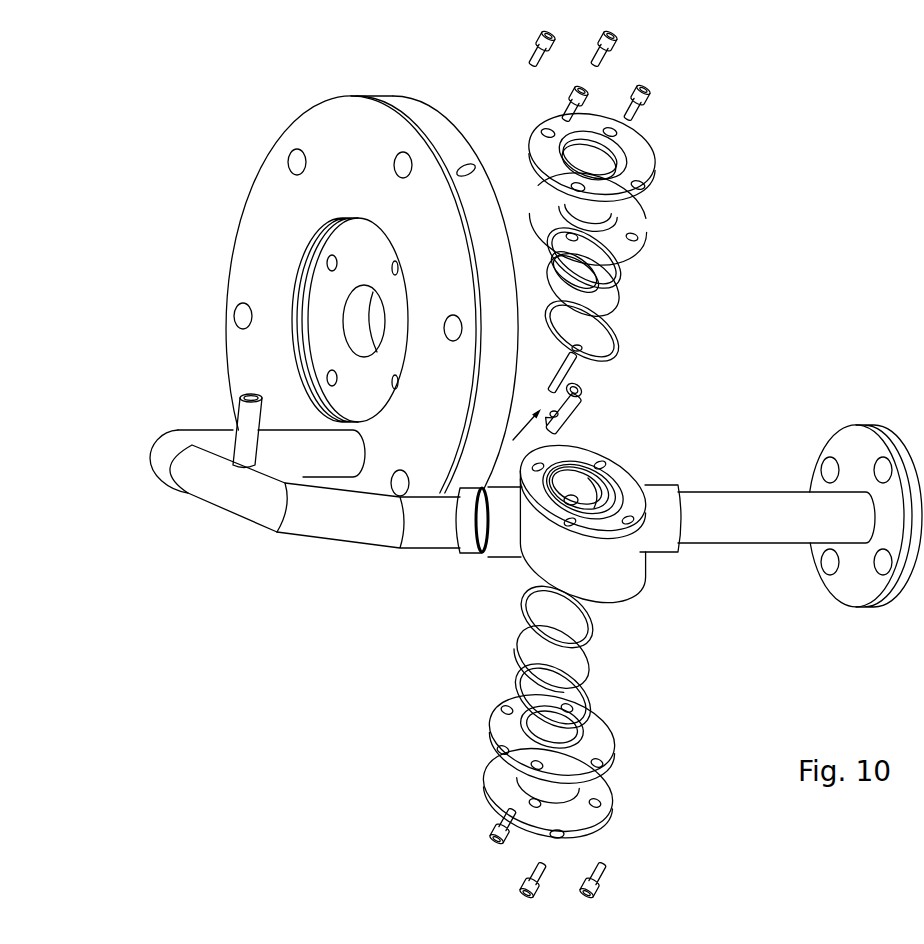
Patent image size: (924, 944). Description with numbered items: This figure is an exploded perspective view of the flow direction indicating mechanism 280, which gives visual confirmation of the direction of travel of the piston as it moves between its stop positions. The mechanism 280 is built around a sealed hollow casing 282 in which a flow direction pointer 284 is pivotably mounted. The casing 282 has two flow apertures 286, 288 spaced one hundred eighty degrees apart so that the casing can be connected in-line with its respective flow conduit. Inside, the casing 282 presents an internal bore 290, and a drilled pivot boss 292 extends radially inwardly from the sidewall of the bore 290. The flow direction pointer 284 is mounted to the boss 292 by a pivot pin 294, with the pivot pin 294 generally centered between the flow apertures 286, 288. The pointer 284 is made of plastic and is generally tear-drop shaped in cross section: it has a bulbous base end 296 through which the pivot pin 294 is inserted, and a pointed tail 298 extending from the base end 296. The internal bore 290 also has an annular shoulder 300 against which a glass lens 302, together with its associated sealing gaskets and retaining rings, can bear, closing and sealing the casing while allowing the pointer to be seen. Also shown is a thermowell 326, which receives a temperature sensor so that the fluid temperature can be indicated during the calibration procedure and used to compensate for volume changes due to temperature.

The flow direction indicating mechanism 280 is at (529, 465).
The sealed hollow casing 282 is at (598, 516).
The flow direction pointer 284 is at (523, 433).
The flow aperture 286 is at (473, 557).
The flow aperture 288 is at (680, 550).
The internal bore 290 is at (627, 489).
The drilled pivot boss 292 is at (570, 500).
The pivot pin 294 is at (578, 370).
The bulbous base end 296 is at (585, 395).
The pointed tail 298 is at (573, 428).
The annular shoulder 300 is at (598, 493).
The glass lens 302 is at (622, 297).
The thermowell 326 is at (230, 430).